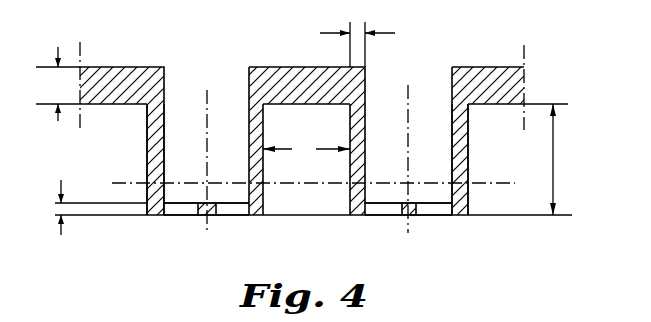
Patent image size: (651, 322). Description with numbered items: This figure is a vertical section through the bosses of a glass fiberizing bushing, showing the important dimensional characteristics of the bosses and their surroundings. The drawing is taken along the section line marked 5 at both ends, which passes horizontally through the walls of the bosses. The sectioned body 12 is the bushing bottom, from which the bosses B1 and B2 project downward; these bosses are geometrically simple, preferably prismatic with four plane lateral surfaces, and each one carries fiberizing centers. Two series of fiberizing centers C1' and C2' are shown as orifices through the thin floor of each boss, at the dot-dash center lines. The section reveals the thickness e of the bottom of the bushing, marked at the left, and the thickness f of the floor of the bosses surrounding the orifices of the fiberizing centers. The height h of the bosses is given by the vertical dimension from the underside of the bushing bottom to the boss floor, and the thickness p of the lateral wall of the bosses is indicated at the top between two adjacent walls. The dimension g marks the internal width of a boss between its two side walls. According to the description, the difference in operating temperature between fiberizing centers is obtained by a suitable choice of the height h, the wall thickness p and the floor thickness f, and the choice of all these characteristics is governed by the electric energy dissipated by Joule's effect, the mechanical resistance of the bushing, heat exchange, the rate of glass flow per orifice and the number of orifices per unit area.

The profiled sheet / corrugated member 12 is at (487, 67).
The section line 5- 5 is at (498, 170).
The boss B1 is at (141, 132).
The boss B2 is at (475, 143).
The fiberizing center C1' is at (196, 234).
The fiberizing center C2' is at (402, 237).
The thickness of the bushing bottom e is at (58, 84).
The thickness of the boss floor f is at (94, 207).
The inner width of channel g is at (306, 147).
The height of the bosses h is at (558, 159).
The thickness of the lateral wall p is at (357, 38).